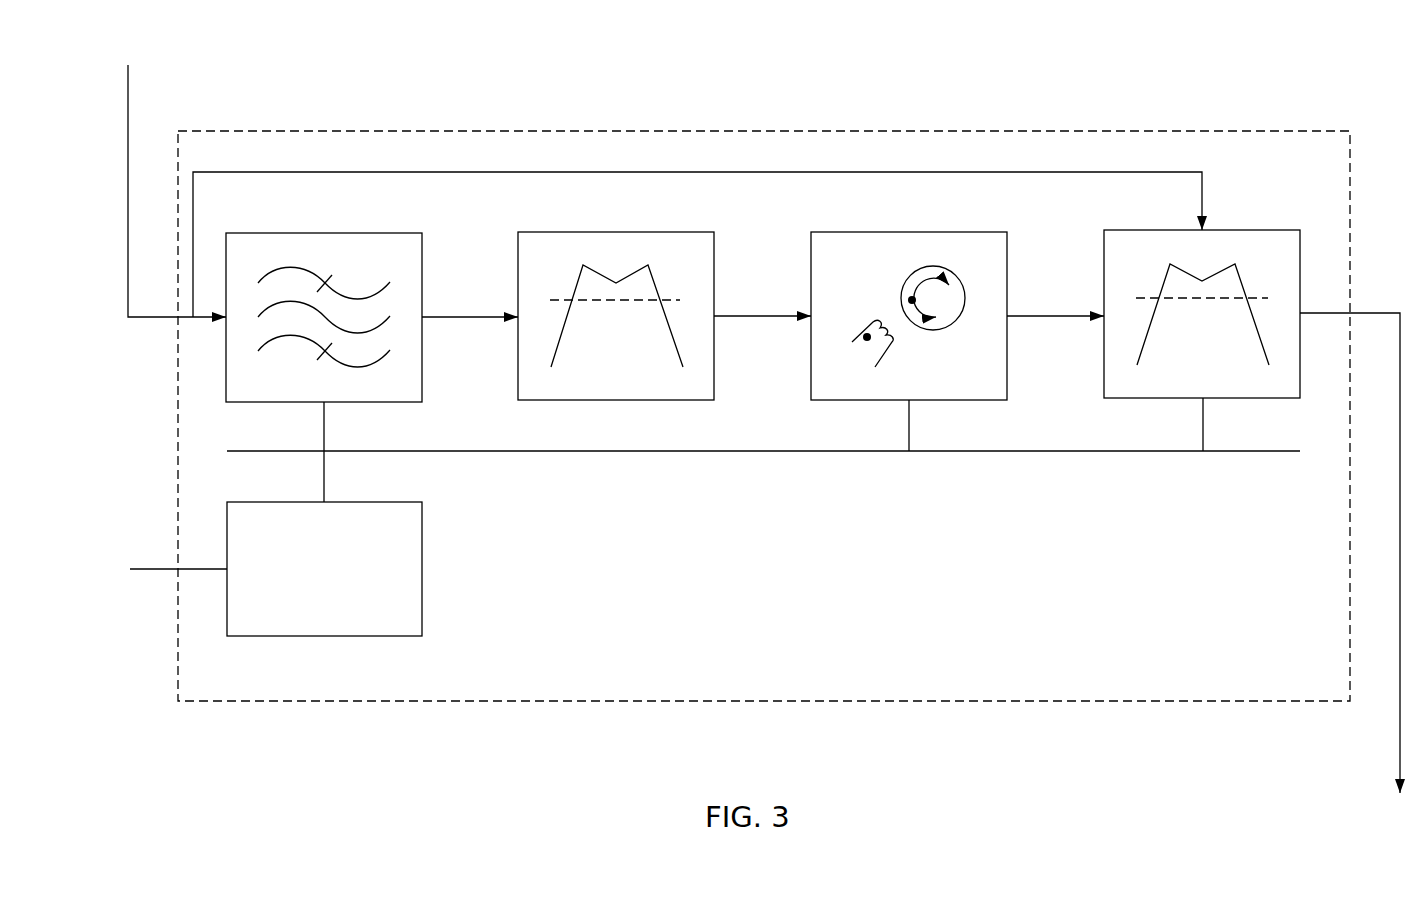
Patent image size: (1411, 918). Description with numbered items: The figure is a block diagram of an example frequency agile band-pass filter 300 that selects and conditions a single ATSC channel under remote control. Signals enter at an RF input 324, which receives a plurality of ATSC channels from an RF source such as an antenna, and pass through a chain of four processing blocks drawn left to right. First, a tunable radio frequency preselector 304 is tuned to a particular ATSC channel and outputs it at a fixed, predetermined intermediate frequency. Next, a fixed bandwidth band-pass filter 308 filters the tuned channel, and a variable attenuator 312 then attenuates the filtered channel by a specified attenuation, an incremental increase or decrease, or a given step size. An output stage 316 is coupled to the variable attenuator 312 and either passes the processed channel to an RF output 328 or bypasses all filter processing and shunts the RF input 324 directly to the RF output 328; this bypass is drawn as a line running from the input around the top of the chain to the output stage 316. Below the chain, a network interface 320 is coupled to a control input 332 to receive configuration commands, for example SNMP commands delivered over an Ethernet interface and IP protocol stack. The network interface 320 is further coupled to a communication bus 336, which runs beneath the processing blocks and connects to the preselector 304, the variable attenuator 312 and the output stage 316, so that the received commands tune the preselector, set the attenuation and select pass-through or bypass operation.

The frequency agile band-pass filter 300 is at (759, 131).
The tunable radio frequency preselector 304 is at (323, 233).
The fixed bandwidth band-pass filter 308 is at (615, 232).
The variable attenuator 312 is at (908, 232).
The output stage 316 is at (1244, 230).
The network interface 320 is at (422, 566).
The RF input 324 is at (128, 130).
The RF output 328 is at (1400, 728).
The control input 332 is at (147, 569).
The communication bus 336 is at (692, 451).